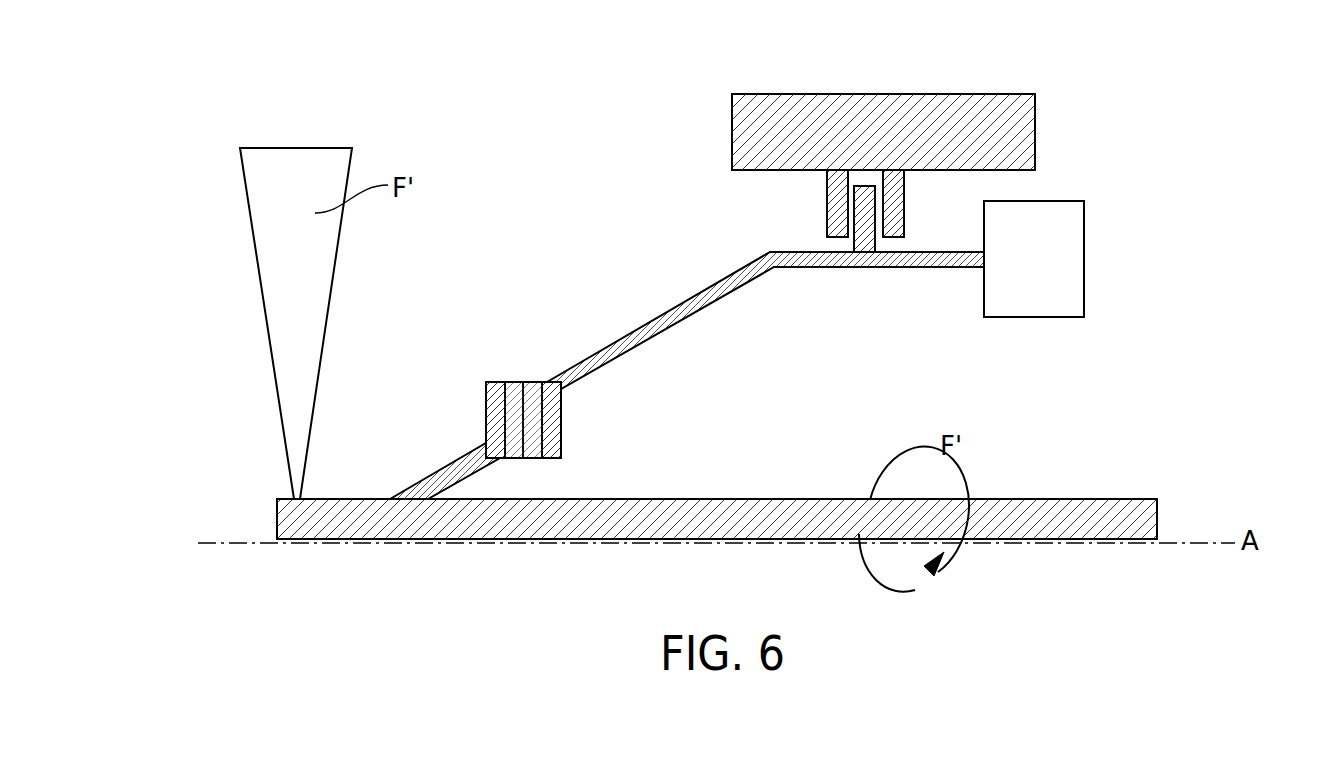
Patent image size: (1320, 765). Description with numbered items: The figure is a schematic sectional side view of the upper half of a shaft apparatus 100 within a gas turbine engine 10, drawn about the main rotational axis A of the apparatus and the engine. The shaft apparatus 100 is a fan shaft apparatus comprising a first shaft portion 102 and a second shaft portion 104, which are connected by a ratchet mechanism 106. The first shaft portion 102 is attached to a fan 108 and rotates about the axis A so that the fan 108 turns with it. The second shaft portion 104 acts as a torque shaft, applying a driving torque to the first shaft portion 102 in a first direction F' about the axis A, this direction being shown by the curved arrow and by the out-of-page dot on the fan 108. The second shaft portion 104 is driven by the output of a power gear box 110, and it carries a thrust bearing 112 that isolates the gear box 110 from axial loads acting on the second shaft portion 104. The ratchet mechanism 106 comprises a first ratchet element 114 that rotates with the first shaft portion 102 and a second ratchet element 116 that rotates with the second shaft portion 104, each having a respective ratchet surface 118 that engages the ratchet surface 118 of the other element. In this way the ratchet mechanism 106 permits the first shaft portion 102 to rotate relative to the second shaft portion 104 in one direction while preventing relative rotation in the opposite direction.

The gas turbine engine 10 is at (343, 95).
The shaft apparatus 100 is at (522, 387).
The first shaft portion 102 is at (352, 498).
The second shaft portion 104 is at (658, 315).
The ratchet mechanism 106 is at (533, 455).
The fan 108 is at (255, 255).
The power gear box 110 is at (1077, 245).
The thrust bearing 112 is at (823, 199).
The first ratchet element 114 is at (486, 397).
The second ratchet element 116 is at (562, 412).
The ratchet surface 118 is at (532, 382).